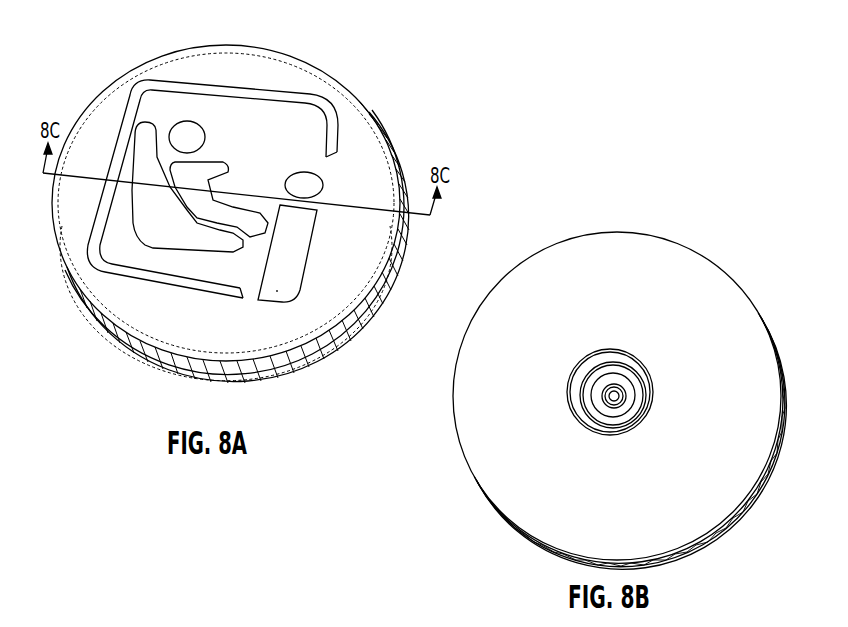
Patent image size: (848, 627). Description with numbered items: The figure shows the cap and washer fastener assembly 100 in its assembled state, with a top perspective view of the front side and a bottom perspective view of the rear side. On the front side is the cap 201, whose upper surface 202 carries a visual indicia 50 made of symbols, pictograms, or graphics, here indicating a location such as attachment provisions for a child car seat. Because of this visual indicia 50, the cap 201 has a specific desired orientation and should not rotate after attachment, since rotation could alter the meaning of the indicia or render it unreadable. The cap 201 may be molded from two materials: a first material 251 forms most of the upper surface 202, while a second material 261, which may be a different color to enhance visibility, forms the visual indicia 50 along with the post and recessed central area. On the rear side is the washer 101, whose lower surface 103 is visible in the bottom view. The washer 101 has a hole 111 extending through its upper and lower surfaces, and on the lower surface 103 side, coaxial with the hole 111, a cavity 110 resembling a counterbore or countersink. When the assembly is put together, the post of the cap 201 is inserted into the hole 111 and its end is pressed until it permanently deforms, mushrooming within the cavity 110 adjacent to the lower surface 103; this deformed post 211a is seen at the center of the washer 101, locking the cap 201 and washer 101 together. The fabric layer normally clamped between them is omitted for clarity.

In FIG. 8A, the visual indicia 50 is at (145, 135).
In FIG. 8B, the cap and washer fastener assembly 100 is at (690, 167).
In FIG. 8A, the washer 101 is at (110, 347).
In FIG. 8B, the washer 101 is at (695, 492).
In FIG. 8B, the lower surface 103 is at (498, 483).
In FIG. 8B, the cavity 110 is at (635, 357).
In FIG. 8B, the hole 111 is at (590, 373).
In FIG. 8A, the cap 201 is at (278, 77).
In FIG. 8A, the upper surface 202 is at (303, 135).
In FIG. 8B, the deformed post 211a is at (616, 388).
In FIG. 8A, the first material 251 is at (312, 273).
In FIG. 8A, the second material 261 is at (277, 290).